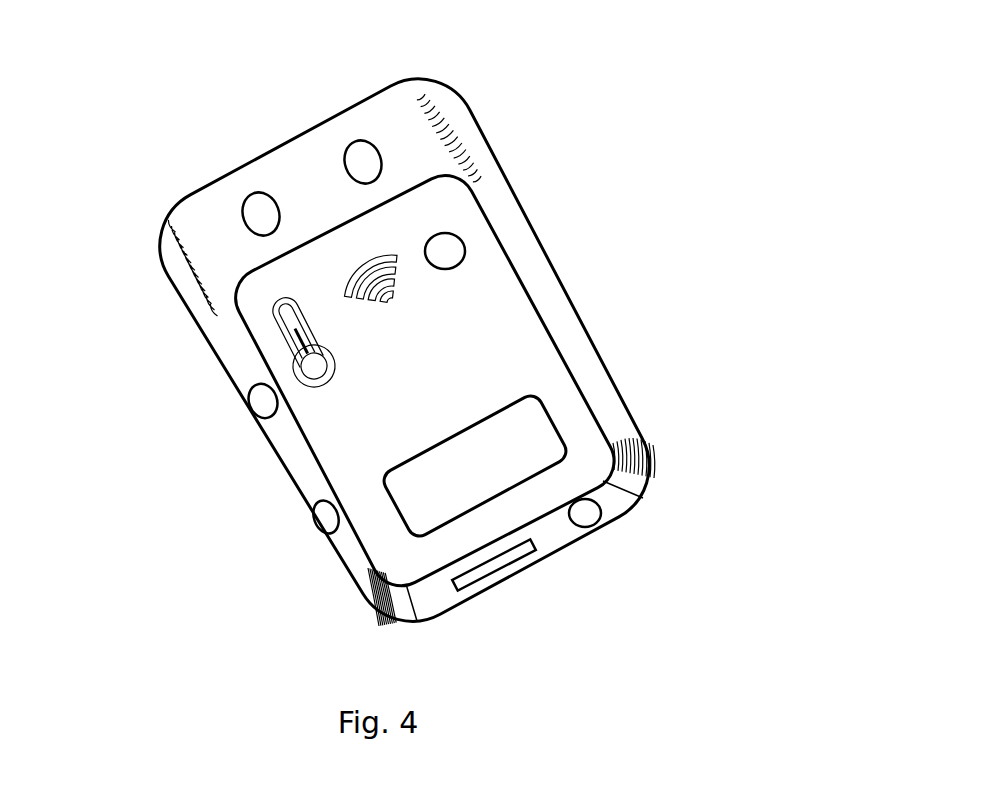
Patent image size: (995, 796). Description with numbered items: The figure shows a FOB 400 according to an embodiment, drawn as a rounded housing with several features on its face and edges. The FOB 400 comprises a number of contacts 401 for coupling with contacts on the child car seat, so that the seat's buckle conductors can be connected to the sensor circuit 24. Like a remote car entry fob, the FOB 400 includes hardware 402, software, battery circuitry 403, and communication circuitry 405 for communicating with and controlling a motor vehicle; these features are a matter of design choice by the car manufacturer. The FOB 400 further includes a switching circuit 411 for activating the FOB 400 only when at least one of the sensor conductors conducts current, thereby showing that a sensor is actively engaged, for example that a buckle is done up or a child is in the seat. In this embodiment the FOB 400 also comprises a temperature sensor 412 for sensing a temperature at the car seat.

The FOB 400 is at (258, 127).
The contacts 401 is at (361, 161).
The hardware 402 is at (567, 330).
The battery circuitry 403 is at (510, 568).
The communication circuitry 405 is at (368, 274).
The switching circuit 411 is at (450, 253).
The temperature sensor 412 is at (303, 343).
The sensor circuit 24 is at (507, 442).